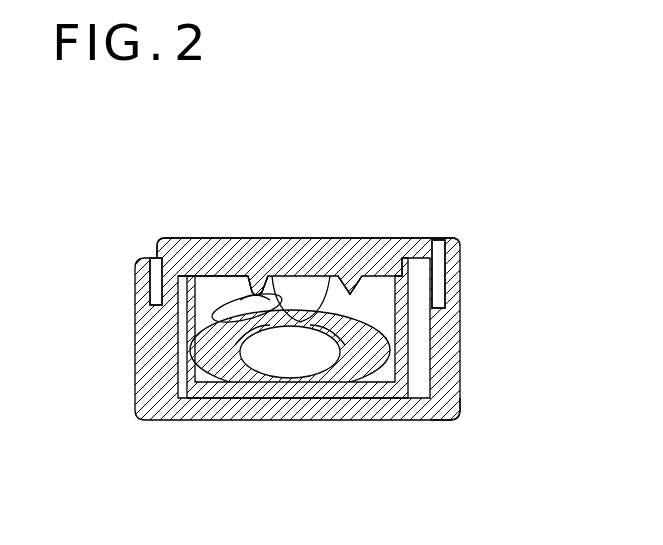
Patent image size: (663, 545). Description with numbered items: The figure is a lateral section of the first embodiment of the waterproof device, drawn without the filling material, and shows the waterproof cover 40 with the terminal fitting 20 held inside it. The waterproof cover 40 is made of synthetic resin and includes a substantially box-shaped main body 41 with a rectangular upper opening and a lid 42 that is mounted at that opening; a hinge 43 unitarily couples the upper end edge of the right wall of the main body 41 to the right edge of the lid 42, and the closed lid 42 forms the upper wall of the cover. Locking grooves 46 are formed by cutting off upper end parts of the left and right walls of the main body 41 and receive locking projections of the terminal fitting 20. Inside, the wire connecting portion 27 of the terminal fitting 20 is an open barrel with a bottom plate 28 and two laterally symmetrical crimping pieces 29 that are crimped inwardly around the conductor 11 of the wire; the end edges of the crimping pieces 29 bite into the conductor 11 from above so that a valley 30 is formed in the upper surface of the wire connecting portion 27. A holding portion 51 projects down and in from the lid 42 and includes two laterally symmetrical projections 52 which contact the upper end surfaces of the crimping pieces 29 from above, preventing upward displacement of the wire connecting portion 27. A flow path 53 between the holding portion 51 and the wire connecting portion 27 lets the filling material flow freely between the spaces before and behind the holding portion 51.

The conductor 11 is at (257, 303).
The terminal fitting 20 is at (390, 379).
The wire connecting portion 27 is at (357, 483).
The bottom plate 28 is at (283, 370).
The crimping pieces 29 is at (252, 345).
The valley 30 is at (310, 292).
The waterproof cover 40 is at (482, 188).
The main body 41 is at (444, 406).
The lid 42 is at (205, 258).
The hinge 43 is at (460, 239).
The locking grooves 46 is at (158, 305).
The holding portion 51 is at (373, 149).
The projections 52 is at (257, 292).
The flow path 53 is at (262, 318).